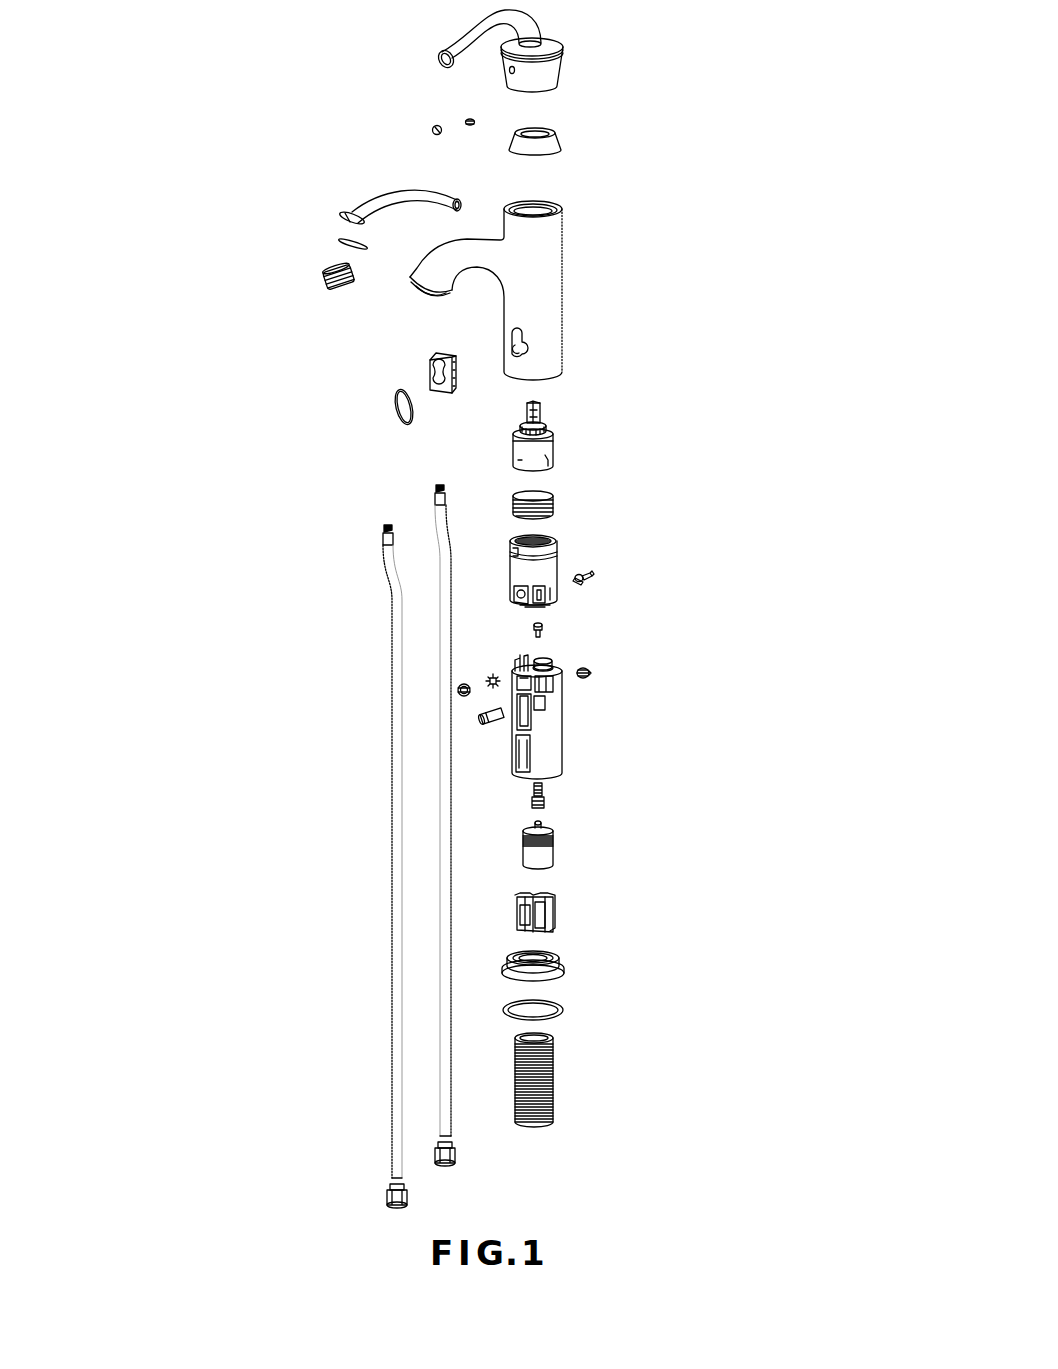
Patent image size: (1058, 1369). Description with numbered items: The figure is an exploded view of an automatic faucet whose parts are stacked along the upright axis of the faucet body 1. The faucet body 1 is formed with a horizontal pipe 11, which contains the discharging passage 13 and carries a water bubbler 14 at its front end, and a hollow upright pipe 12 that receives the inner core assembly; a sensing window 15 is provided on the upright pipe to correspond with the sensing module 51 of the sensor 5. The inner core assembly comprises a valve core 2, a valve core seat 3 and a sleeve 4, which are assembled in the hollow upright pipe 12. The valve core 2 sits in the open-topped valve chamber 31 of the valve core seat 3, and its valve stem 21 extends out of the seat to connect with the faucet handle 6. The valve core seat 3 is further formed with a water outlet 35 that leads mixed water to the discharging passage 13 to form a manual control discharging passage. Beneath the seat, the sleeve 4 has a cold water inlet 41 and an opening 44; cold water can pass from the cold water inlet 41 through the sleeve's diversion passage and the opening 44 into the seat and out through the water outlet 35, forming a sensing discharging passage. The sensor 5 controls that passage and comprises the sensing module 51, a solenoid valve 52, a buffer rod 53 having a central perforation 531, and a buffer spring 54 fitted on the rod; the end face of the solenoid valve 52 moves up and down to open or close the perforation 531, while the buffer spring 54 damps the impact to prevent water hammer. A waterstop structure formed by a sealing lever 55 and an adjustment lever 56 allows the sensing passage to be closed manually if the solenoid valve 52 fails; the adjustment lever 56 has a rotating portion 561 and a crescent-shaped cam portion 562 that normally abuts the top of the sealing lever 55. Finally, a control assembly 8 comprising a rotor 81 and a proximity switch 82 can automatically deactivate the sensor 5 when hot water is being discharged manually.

The faucet body 1 is at (443, 250).
The valve core 2 is at (578, 429).
The valve core seat 3 is at (497, 570).
The sleeve 4 is at (581, 709).
The sensor 5 is at (283, 453).
The faucet handle 6 is at (533, 32).
The control assembly 8 is at (434, 667).
The horizontal pipe 11 is at (432, 260).
The hollow upright pipe 12 is at (551, 296).
The discharging passage 13 is at (392, 203).
The water bubbler 14 is at (325, 272).
The sensing window 15 is at (512, 340).
The valve stem 21 is at (540, 408).
The valve chamber 31 is at (555, 542).
The water outlet 35 is at (510, 593).
The cold water inlet 41 is at (565, 679).
The opening 44 is at (552, 661).
The sensing module 51 is at (397, 418).
The solenoid valve 52 is at (524, 850).
The buffer rod 53 is at (548, 806).
The buffer spring 54 is at (548, 792).
The sealing lever 55 is at (548, 632).
The adjustment lever 56 is at (642, 596).
The rotor 81 is at (493, 674).
The proximity switch 82 is at (481, 677).
The perforation 531 is at (530, 784).
The rotating portion 561 is at (590, 576).
The cam portion 562 is at (583, 586).